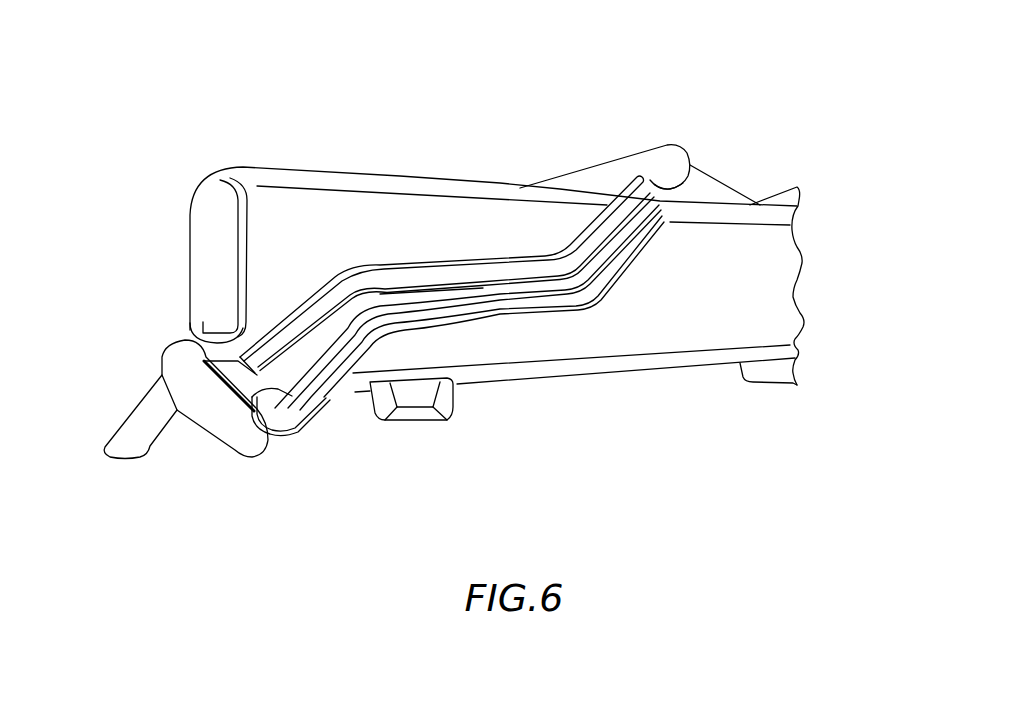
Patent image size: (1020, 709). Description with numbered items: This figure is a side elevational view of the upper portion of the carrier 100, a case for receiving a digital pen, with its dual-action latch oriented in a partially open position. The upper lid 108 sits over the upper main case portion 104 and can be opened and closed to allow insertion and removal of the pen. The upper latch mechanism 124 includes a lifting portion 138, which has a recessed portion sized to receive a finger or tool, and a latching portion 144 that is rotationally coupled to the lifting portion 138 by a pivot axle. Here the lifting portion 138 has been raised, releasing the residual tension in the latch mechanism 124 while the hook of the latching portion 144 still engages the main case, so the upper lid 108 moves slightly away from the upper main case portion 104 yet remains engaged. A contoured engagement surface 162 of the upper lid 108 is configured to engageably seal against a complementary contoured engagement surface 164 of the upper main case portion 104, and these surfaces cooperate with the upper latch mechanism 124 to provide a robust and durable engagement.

The carrier 100 is at (700, 82).
The upper main case portion 104 is at (578, 376).
The upper lid 108 is at (351, 176).
The upper latch mechanism 124 is at (157, 468).
The lifting portion 138 is at (116, 436).
The latching portion 144 is at (228, 438).
The contoured engagement surface 162 is at (292, 348).
The complementary contoured engagement surface 164 is at (310, 333).